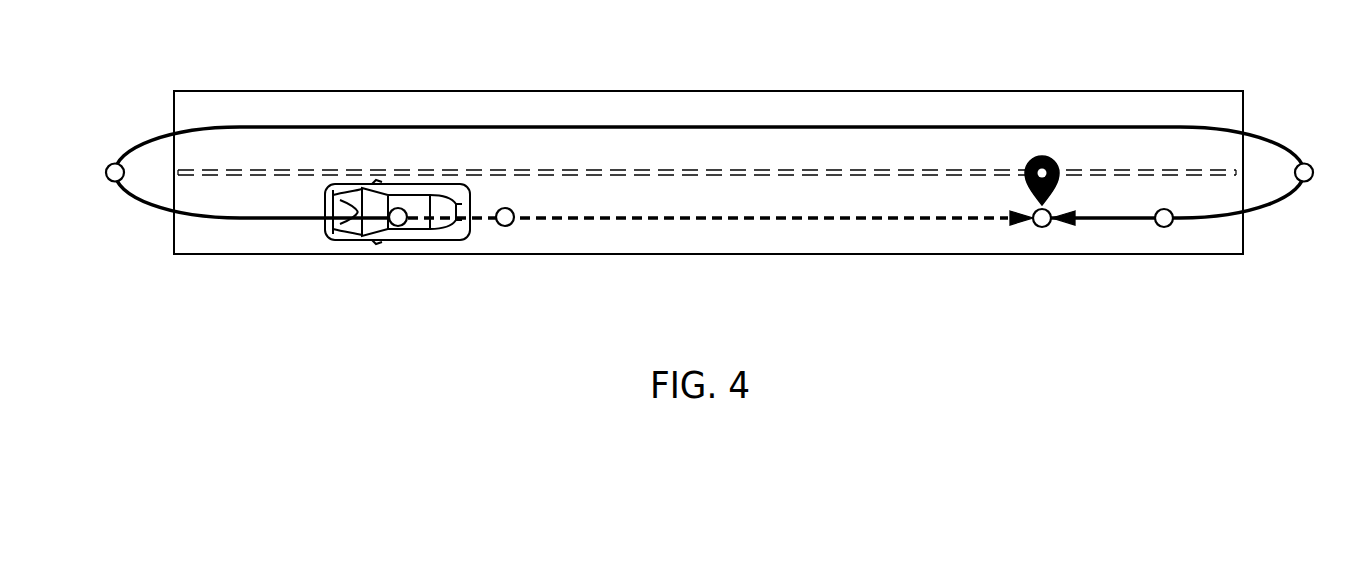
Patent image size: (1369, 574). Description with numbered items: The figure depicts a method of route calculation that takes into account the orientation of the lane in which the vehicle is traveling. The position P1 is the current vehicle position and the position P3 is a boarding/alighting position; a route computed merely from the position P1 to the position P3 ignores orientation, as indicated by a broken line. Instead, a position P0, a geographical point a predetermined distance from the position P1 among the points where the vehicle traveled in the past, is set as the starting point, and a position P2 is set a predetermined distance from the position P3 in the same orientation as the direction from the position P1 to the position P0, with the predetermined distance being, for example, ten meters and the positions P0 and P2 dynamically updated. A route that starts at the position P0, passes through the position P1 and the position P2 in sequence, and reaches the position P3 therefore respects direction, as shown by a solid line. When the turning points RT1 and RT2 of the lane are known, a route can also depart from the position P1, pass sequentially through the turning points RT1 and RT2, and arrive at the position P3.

The turning point RT1 is at (108, 166).
The turning point RT2 is at (1311, 167).
The position P0 is at (505, 226).
The position P1 is at (398, 226).
The position P2 is at (1163, 227).
The position P3 is at (1041, 227).